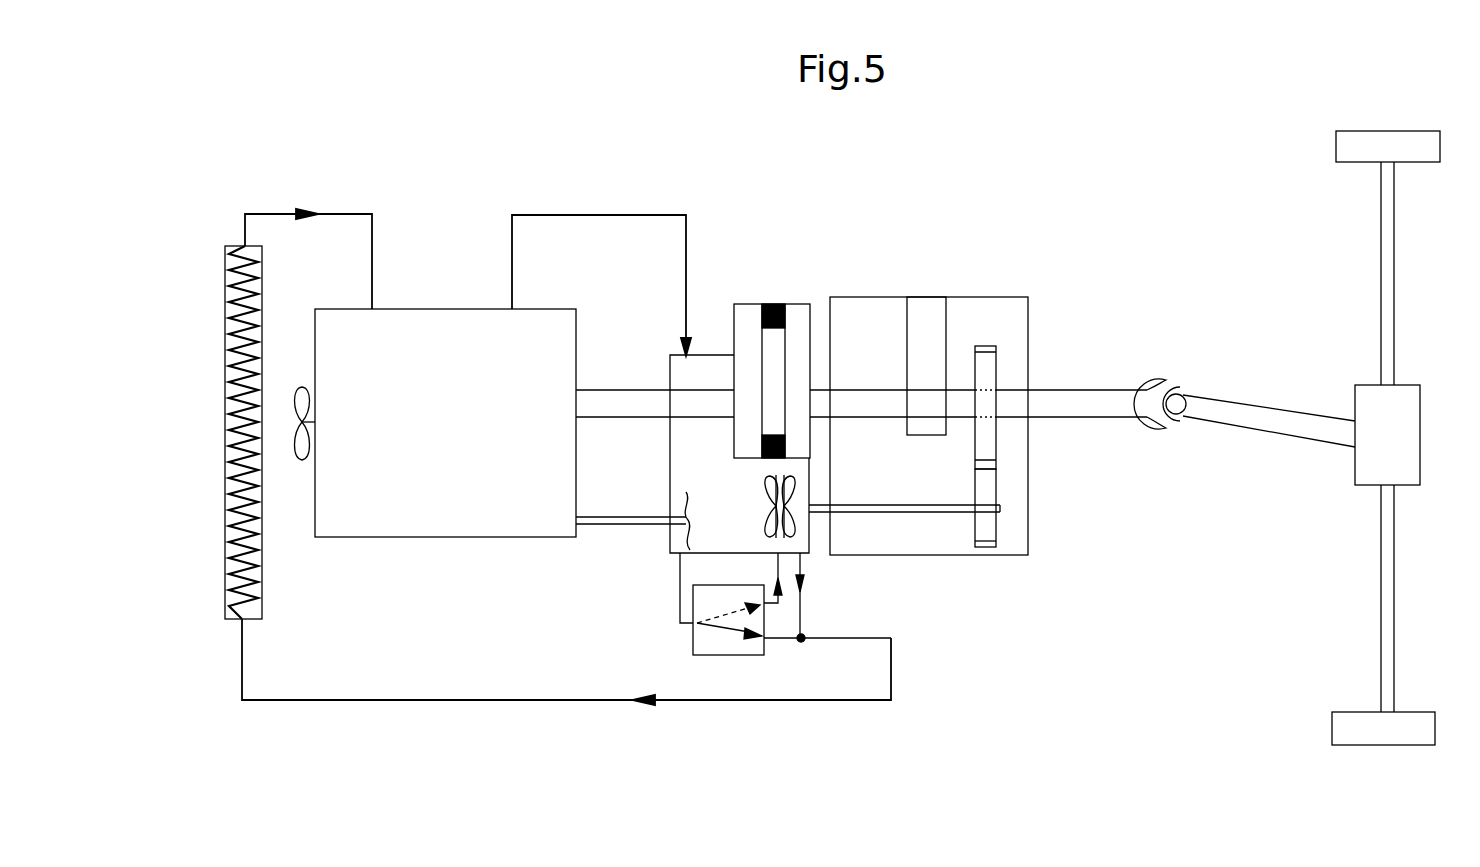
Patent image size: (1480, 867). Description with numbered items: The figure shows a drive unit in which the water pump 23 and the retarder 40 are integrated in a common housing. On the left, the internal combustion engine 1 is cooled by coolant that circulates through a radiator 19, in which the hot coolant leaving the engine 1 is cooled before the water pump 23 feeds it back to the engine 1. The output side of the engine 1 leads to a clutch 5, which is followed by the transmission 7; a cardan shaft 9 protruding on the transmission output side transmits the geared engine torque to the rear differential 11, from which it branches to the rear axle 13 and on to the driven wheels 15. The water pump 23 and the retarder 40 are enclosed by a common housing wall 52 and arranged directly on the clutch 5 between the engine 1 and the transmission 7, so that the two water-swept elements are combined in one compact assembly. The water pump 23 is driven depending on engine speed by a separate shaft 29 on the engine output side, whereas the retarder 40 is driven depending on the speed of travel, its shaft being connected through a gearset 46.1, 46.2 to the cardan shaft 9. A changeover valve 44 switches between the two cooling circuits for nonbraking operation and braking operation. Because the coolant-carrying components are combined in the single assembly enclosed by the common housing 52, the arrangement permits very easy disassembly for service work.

The engine 1 is at (419, 523).
The clutch 5 is at (750, 315).
The transmission 7 is at (927, 313).
The cardan shaft 9 is at (1107, 405).
The rear differential 11 is at (1393, 456).
The rear axle 13 is at (1386, 577).
The driven wheels 15 is at (1396, 718).
The radiator 19 is at (228, 537).
The water pump 23 is at (680, 548).
The shaft 29 is at (600, 517).
The retarder 40 is at (790, 545).
The changeover valve 44 is at (720, 651).
The gearset 46.1 is at (987, 495).
The gearset 46.2 is at (987, 440).
The common housing wall 52 is at (705, 355).